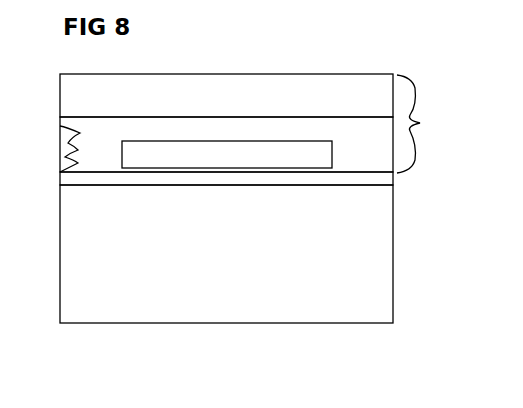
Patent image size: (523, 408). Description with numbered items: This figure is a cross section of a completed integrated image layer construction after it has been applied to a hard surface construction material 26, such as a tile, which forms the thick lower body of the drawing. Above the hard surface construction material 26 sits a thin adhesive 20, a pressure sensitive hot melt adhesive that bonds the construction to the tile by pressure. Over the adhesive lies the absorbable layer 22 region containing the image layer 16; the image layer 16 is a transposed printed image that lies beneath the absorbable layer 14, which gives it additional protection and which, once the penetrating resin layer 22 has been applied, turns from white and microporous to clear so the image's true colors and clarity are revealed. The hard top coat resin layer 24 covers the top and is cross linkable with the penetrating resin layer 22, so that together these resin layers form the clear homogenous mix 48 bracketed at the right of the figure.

The absorbable layer 14 is at (65, 152).
The image layer 16 is at (318, 145).
The adhesive 20 is at (385, 177).
The penetrating resin layer 22 is at (228, 130).
The hard top coat resin layer 24 is at (298, 84).
The hard surface construction material 26 is at (205, 307).
The homogenous mix 48 is at (418, 124).